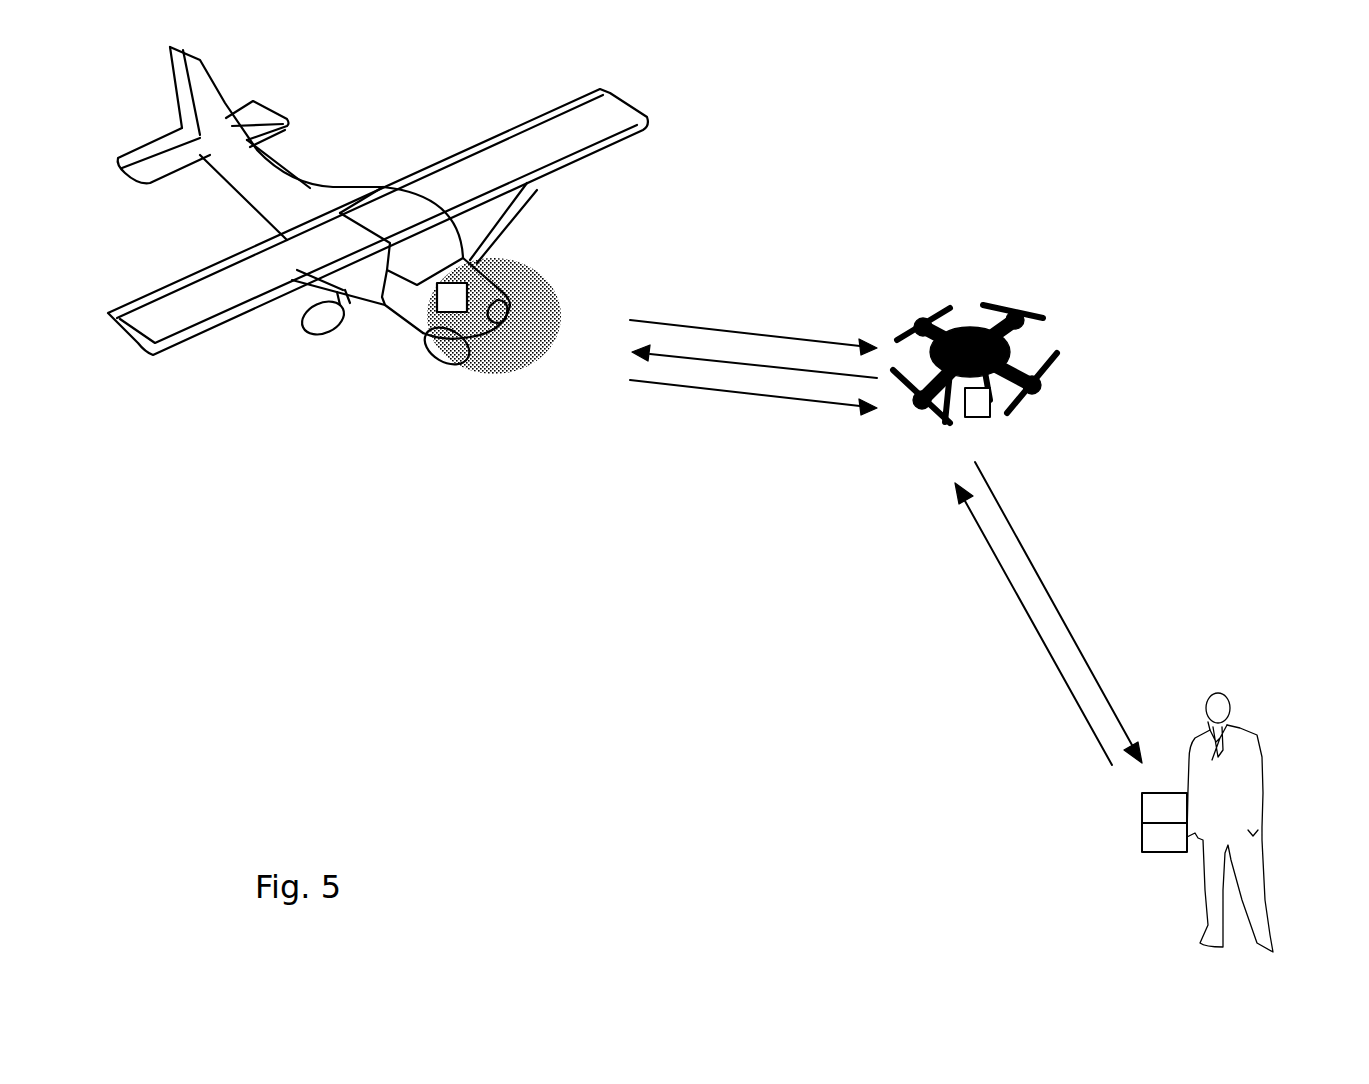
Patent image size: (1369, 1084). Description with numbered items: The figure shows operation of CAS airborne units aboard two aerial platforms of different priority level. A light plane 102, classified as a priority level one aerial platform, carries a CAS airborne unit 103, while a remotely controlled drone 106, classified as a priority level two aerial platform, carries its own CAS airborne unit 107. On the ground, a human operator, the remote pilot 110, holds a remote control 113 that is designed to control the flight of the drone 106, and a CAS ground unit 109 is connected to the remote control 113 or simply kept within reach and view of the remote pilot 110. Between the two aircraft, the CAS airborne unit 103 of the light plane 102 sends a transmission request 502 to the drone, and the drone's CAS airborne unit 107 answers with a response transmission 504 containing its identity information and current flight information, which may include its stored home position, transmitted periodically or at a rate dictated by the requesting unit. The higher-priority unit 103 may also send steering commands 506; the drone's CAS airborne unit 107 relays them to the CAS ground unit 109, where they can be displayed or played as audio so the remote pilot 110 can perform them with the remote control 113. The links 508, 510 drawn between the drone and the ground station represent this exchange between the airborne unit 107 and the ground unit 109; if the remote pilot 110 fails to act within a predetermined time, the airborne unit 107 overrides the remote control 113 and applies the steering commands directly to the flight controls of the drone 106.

The light plane 102 is at (170, 140).
The CAS airborne unit 103 is at (433, 295).
The remotely controlled drone 106 is at (1017, 372).
The CAS airborne unit 107 is at (985, 420).
The CAS ground unit 109 is at (1142, 793).
The remote pilot 110 is at (1257, 745).
The remote control 113 is at (1173, 853).
The transmission request 502 is at (688, 327).
The response transmission 504 is at (758, 365).
The steering commands 506 is at (710, 390).
The communication signal from drone to recipient 508 is at (1067, 622).
The communication signal from recipient to drone 510 is at (998, 563).